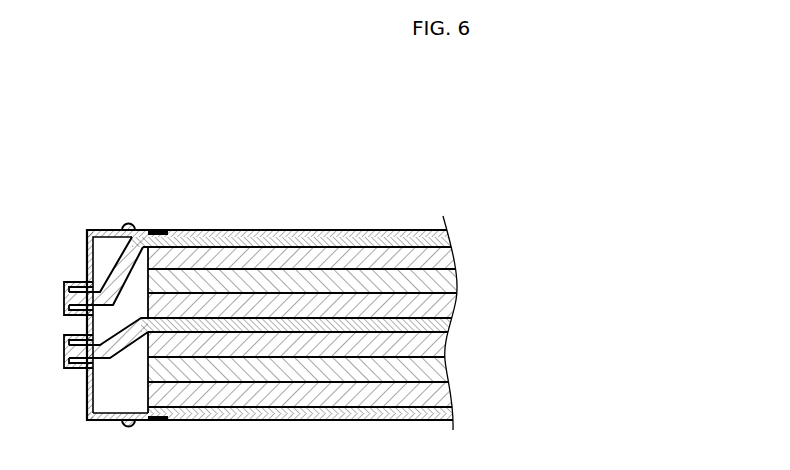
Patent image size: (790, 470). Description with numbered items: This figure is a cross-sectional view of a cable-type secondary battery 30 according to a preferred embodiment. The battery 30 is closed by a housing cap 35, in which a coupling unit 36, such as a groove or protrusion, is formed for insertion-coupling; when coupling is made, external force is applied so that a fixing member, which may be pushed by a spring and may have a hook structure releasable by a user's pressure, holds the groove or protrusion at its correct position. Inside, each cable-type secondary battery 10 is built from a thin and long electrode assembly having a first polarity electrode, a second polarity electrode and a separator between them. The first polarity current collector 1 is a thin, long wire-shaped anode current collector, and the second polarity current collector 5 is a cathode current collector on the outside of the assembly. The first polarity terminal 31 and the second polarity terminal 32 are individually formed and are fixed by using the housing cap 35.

The cable-type secondary battery 30 is at (311, 184).
The cable-type secondary battery 10 is at (373, 232).
The housing cap 35 is at (91, 231).
The coupling unit 36 is at (128, 224).
The second polarity current collector 5 is at (116, 272).
The first polarity current collector 1 is at (121, 348).
The second polarity terminal 32 is at (64, 297).
The first polarity terminal 31 is at (64, 351).